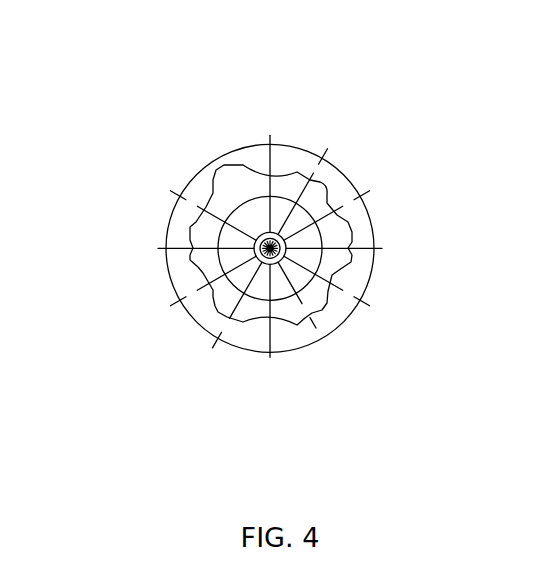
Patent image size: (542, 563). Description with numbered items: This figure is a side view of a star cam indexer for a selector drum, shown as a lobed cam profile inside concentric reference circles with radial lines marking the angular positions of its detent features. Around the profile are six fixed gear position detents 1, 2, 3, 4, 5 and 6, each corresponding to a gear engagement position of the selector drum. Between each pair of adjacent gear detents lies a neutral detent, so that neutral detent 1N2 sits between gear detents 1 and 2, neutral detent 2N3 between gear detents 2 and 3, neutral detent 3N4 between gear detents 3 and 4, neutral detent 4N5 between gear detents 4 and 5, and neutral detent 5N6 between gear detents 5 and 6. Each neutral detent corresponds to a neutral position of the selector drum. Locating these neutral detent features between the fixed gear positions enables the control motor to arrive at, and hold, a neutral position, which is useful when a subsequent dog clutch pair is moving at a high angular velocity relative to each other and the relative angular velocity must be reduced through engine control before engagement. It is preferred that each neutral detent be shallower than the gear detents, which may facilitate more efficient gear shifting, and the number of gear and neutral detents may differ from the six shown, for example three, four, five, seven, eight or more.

The fixed gear position detent 1 is at (270, 126).
The fixed gear position detent 2 is at (376, 187).
The fixed gear position detent 3 is at (376, 309).
The fixed gear position detent 4 is at (270, 370).
The fixed gear position detent 5 is at (164, 309).
The fixed gear position detent 6 is at (164, 187).
The neutral detent 1N2 is at (331, 143).
The neutral detent 2N3 is at (392, 248).
The neutral detent 3N4 is at (318, 332).
The neutral detent 4N5 is at (209, 354).
The neutral detent 5N6 is at (148, 248).